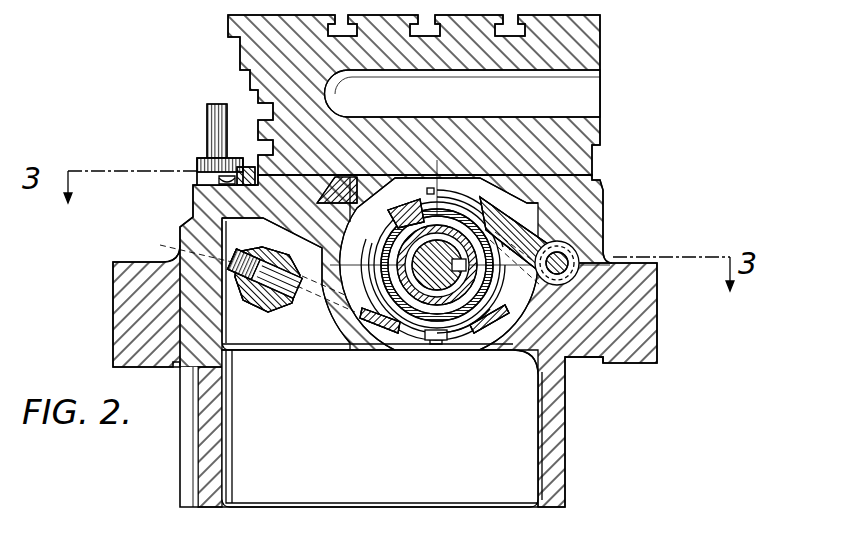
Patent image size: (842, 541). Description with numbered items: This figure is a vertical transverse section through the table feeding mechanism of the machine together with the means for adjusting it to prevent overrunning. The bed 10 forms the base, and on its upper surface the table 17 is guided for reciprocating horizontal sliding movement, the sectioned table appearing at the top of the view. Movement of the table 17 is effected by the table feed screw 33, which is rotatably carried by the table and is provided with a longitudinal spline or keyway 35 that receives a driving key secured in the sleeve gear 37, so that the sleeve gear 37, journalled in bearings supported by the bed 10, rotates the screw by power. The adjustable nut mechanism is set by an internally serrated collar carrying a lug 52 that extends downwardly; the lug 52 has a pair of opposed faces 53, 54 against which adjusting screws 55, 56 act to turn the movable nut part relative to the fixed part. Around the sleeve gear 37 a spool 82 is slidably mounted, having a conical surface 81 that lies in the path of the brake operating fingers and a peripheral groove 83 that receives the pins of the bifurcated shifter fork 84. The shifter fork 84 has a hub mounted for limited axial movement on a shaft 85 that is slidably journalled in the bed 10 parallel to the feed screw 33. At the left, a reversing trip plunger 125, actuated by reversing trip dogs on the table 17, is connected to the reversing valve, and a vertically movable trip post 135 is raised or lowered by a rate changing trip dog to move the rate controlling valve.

The bed 10 is at (547, 415).
The table 17 is at (600, 47).
The table feed screw 33 is at (348, 306).
The longitudinal spline or keyway 35 is at (567, 363).
The sleeve gear 37 is at (421, 305).
The lug 52 is at (445, 345).
The opposed face of lug 53 is at (470, 325).
The opposed face of lug 54 is at (412, 318).
The adjusting screw 55 is at (500, 320).
The adjusting screw 56 is at (263, 307).
The conical surface 81 is at (458, 180).
The spool 82 is at (485, 178).
The peripheral groove 83 is at (412, 180).
The shifter fork 84 is at (557, 225).
The shaft 85 is at (580, 250).
The reversing trip plunger 125 is at (217, 178).
The trip post 135 is at (207, 126).